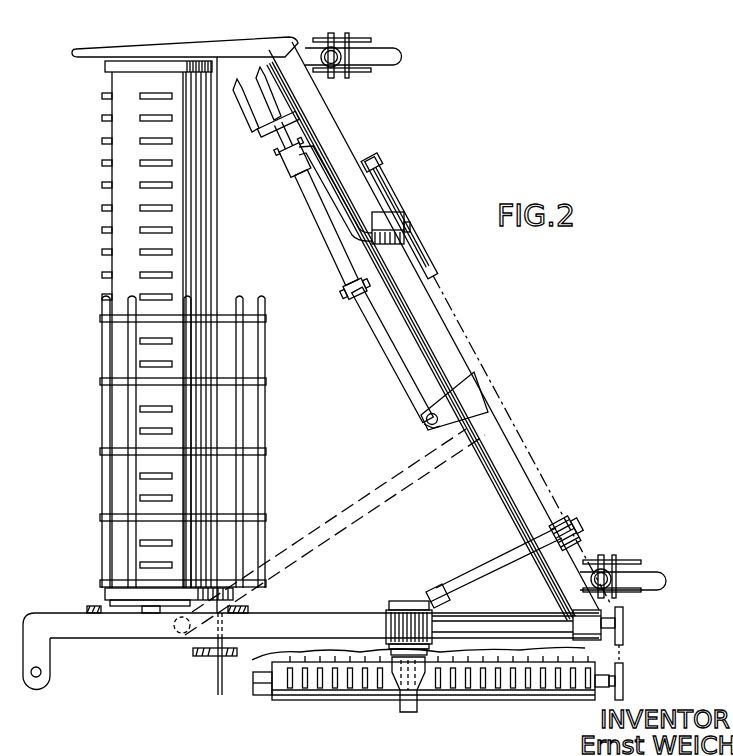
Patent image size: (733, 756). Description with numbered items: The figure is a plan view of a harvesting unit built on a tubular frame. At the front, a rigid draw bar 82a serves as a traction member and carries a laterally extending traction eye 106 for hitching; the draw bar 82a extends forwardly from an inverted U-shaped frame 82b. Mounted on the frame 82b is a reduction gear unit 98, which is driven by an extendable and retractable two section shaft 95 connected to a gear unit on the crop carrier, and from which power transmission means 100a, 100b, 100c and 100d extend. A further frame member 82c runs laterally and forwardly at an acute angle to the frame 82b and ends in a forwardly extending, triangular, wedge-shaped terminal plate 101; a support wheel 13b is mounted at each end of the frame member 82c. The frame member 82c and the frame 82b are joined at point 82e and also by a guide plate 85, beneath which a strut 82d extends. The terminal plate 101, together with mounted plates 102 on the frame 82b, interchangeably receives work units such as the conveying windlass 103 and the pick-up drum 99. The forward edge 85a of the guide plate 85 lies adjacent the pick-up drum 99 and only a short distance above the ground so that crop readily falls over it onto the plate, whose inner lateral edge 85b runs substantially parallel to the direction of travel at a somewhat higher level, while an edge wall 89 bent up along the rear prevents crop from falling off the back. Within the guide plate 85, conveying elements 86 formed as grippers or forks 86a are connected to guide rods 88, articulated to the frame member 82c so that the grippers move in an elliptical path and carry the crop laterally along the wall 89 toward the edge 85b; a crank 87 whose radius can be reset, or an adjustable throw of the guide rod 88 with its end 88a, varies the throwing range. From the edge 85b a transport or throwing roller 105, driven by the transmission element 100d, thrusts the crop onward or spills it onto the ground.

The terminal plate 101 is at (206, 54).
The support wheels 13b is at (340, 55).
The frame member 82c is at (328, 115).
The edge wall 89 is at (332, 152).
The grippers or forks 86a is at (247, 112).
The conveying elements 86 is at (288, 170).
The crank 87 is at (342, 208).
The forward edge 85a is at (219, 252).
The pick-up drum 99 is at (108, 170).
The guide rods 88 is at (387, 348).
The rod end eye 88a is at (426, 420).
The conveying windlass 103 is at (263, 456).
The guide plate 85 is at (361, 481).
The strut 82d is at (372, 504).
The power transmission means 100c is at (456, 320).
The inverted U-shaped frame 82b is at (283, 628).
The reduction gear unit 98 is at (395, 604).
The power transmission means 100b is at (512, 625).
The interconnection point 82e is at (605, 613).
The power transmission element 100d is at (624, 668).
The draw bar 82a is at (78, 630).
The power transmission means 100a is at (234, 655).
The traction eye 106 is at (38, 688).
The inner lateral edge 85b is at (232, 690).
The transport or throwing roller 105 is at (320, 697).
The two section shaft 95 is at (423, 700).
The mounted plates 102 is at (84, 610).